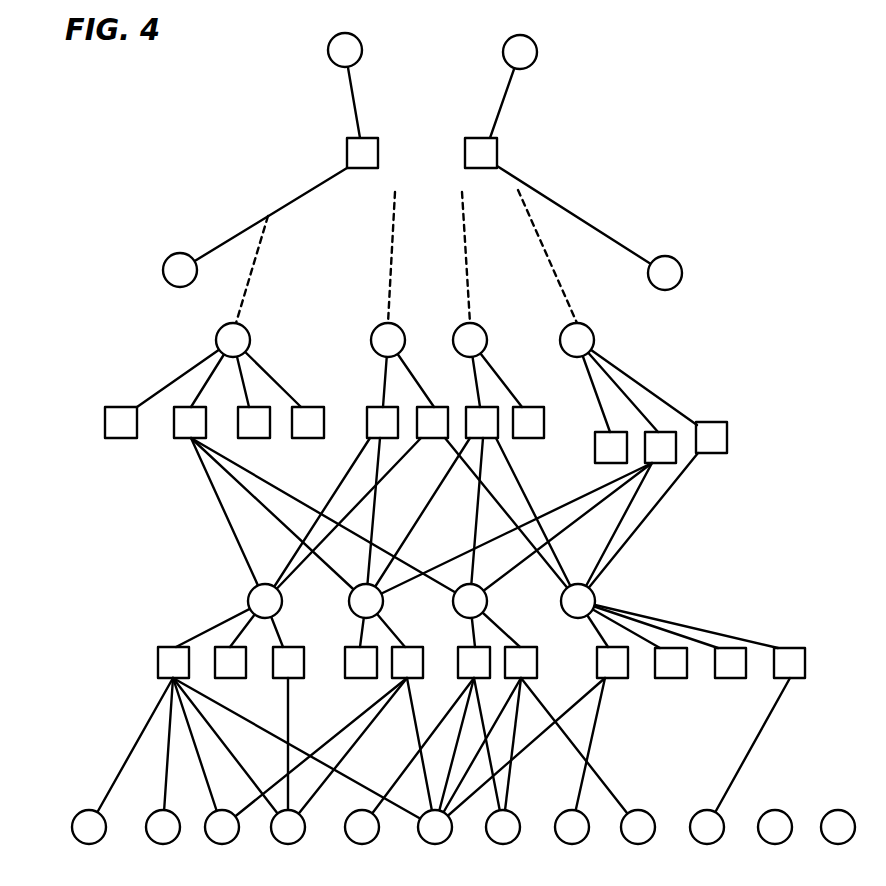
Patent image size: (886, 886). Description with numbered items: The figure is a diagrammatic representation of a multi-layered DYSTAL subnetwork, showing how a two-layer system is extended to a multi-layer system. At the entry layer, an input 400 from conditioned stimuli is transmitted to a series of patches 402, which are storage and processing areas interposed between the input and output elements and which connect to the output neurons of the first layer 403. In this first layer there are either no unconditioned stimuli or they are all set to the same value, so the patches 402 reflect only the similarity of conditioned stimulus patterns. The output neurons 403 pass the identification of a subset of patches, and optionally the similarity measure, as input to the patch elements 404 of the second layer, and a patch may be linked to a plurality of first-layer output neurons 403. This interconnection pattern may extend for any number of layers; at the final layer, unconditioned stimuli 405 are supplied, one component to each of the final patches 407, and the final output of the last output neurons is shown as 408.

The input 400 is at (80, 813).
The patches 402 is at (158, 662).
The output neurons of the first layer 403 is at (248, 601).
The patch elements of the second layer 404 is at (105, 416).
The unconditioned stimuli 405 is at (268, 213).
The final patches 407 is at (347, 152).
The final output 408 is at (329, 55).